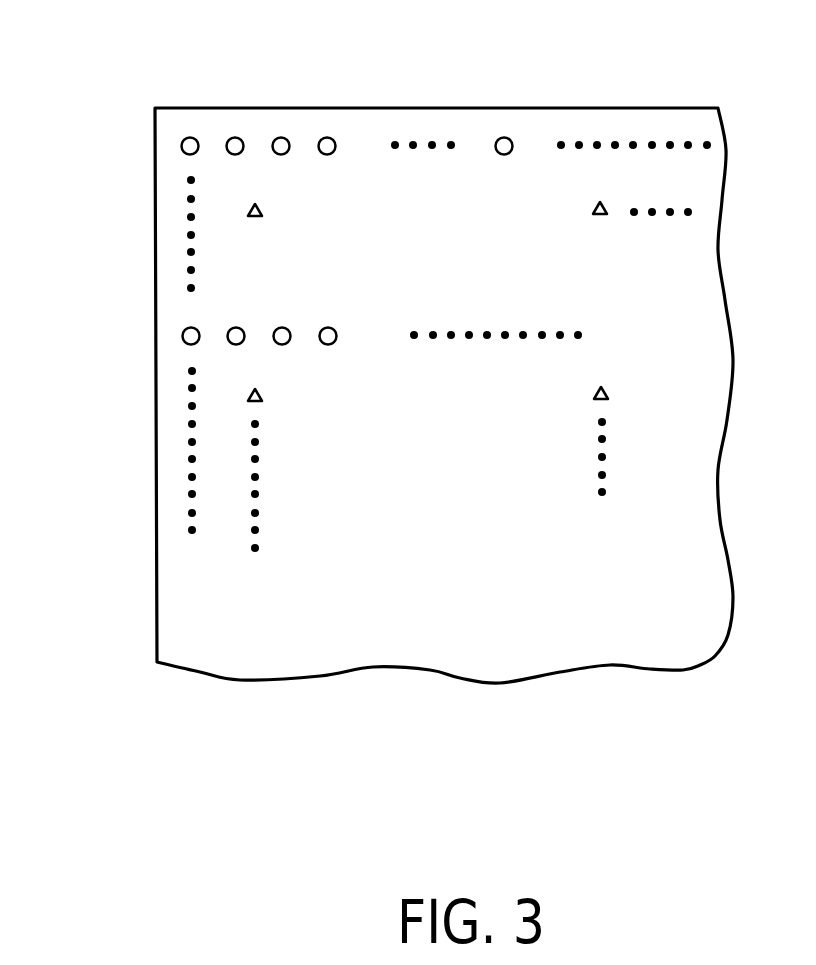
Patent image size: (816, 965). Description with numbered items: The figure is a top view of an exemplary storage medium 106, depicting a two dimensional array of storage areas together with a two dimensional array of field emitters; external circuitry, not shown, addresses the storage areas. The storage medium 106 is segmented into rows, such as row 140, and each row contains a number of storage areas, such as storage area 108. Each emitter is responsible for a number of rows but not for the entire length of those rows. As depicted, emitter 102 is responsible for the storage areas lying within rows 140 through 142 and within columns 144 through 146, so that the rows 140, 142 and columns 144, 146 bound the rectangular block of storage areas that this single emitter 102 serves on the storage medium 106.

The emitter 102 is at (262, 208).
The storage medium 106 is at (622, 107).
The storage area 108 is at (188, 135).
The row 140 is at (175, 154).
The row 142 is at (177, 342).
The column 144 is at (180, 135).
The column 146 is at (505, 123).